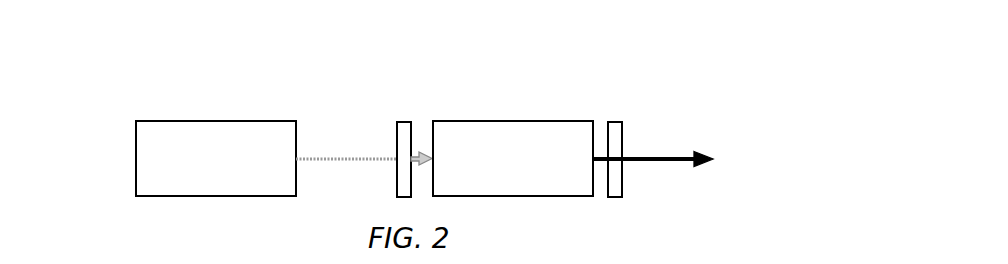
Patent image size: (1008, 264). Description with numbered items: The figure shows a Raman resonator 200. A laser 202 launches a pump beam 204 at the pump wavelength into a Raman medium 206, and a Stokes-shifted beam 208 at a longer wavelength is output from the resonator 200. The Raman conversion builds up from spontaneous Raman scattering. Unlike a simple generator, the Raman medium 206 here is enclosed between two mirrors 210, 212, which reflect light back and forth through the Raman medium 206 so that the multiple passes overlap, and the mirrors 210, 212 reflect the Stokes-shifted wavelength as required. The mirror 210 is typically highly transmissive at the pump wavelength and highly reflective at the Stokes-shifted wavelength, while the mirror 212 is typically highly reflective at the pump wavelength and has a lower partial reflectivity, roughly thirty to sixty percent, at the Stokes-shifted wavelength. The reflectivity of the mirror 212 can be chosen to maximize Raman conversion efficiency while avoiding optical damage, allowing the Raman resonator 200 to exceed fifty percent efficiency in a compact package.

The Raman resonator 200 is at (116, 102).
The laser 202 is at (217, 121).
The pump beam 204 is at (353, 160).
The Raman medium 206 is at (494, 121).
The Stokes-shifted beam 208 is at (688, 161).
The mirror 210 is at (397, 138).
The mirror 212 is at (624, 130).